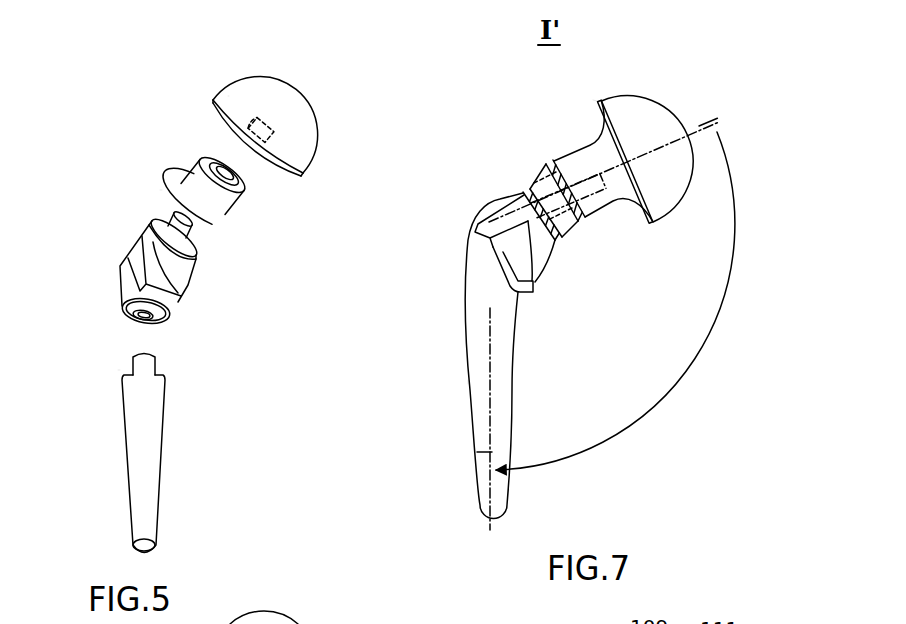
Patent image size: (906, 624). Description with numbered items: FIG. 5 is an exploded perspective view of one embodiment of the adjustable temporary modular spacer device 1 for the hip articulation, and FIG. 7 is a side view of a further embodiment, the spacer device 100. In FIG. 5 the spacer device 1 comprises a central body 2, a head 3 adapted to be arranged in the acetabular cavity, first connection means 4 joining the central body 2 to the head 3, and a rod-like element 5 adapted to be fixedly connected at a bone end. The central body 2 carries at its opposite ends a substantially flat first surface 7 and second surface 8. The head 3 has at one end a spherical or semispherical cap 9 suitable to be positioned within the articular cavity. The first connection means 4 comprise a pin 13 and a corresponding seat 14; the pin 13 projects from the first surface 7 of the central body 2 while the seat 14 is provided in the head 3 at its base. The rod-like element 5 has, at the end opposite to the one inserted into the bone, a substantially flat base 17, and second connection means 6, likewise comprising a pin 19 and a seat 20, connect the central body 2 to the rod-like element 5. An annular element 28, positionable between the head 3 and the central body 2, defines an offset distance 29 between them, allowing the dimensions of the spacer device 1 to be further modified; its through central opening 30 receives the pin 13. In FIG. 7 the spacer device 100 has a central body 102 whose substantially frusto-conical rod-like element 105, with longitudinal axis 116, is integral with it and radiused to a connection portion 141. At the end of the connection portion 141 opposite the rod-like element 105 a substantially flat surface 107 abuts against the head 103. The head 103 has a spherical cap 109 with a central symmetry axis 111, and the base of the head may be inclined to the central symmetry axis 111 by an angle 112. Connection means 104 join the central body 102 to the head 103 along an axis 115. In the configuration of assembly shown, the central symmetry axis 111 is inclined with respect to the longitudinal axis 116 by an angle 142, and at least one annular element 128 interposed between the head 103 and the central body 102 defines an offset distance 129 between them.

In FIG. 5, the adjustable temporary modular spacer device 1 is at (110, 153).
In FIG. 5, the central body 2 is at (118, 281).
In FIG. 5, the head 3 is at (220, 77).
In FIG. 5, the first connection means 4 is at (154, 186).
In FIG. 5, the rod-like element 5 is at (158, 438).
In FIG. 5, the second connection means 6 is at (110, 355).
In FIG. 5, the first surface 7 is at (198, 249).
In FIG. 5, the second surface 8 is at (167, 324).
In FIG. 5, the cap 9 is at (250, 78).
In FIG. 5, the pin 13 is at (195, 233).
In FIG. 5, the seat 14 is at (270, 141).
In FIG. 5, the base 17 is at (122, 377).
In FIG. 5, the pin 19 is at (156, 366).
In FIG. 5, the seat 20 is at (132, 320).
In FIG. 5, the annular element 28 is at (235, 207).
In FIG. 5, the offset distance 29 is at (183, 147).
In FIG. 5, the through central opening 30 is at (218, 162).
In FIG. 7, the spacer device 100 is at (482, 181).
In FIG. 7, the central body 102 is at (460, 288).
In FIG. 7, the head 103 is at (592, 95).
In FIG. 7, the connection means 104 is at (545, 176).
In FIG. 7, the rod-like element 105 is at (470, 383).
In FIG. 7, the flat surface 107 is at (526, 186).
In FIG. 7, the spherical cap 109 is at (640, 98).
In FIG. 7, the central symmetry axis 111 is at (719, 121).
In FIG. 7, the angle 112 is at (697, 128).
In FIG. 7, the axis 115 is at (694, 121).
In FIG. 7, the longitudinal axis 116 is at (477, 456).
In FIG. 7, the annular element 128 is at (590, 222).
In FIG. 7, the offset distance 129 is at (585, 217).
In FIG. 7, the connection portion 141 is at (484, 209).
In FIG. 7, the angle 142 is at (615, 301).